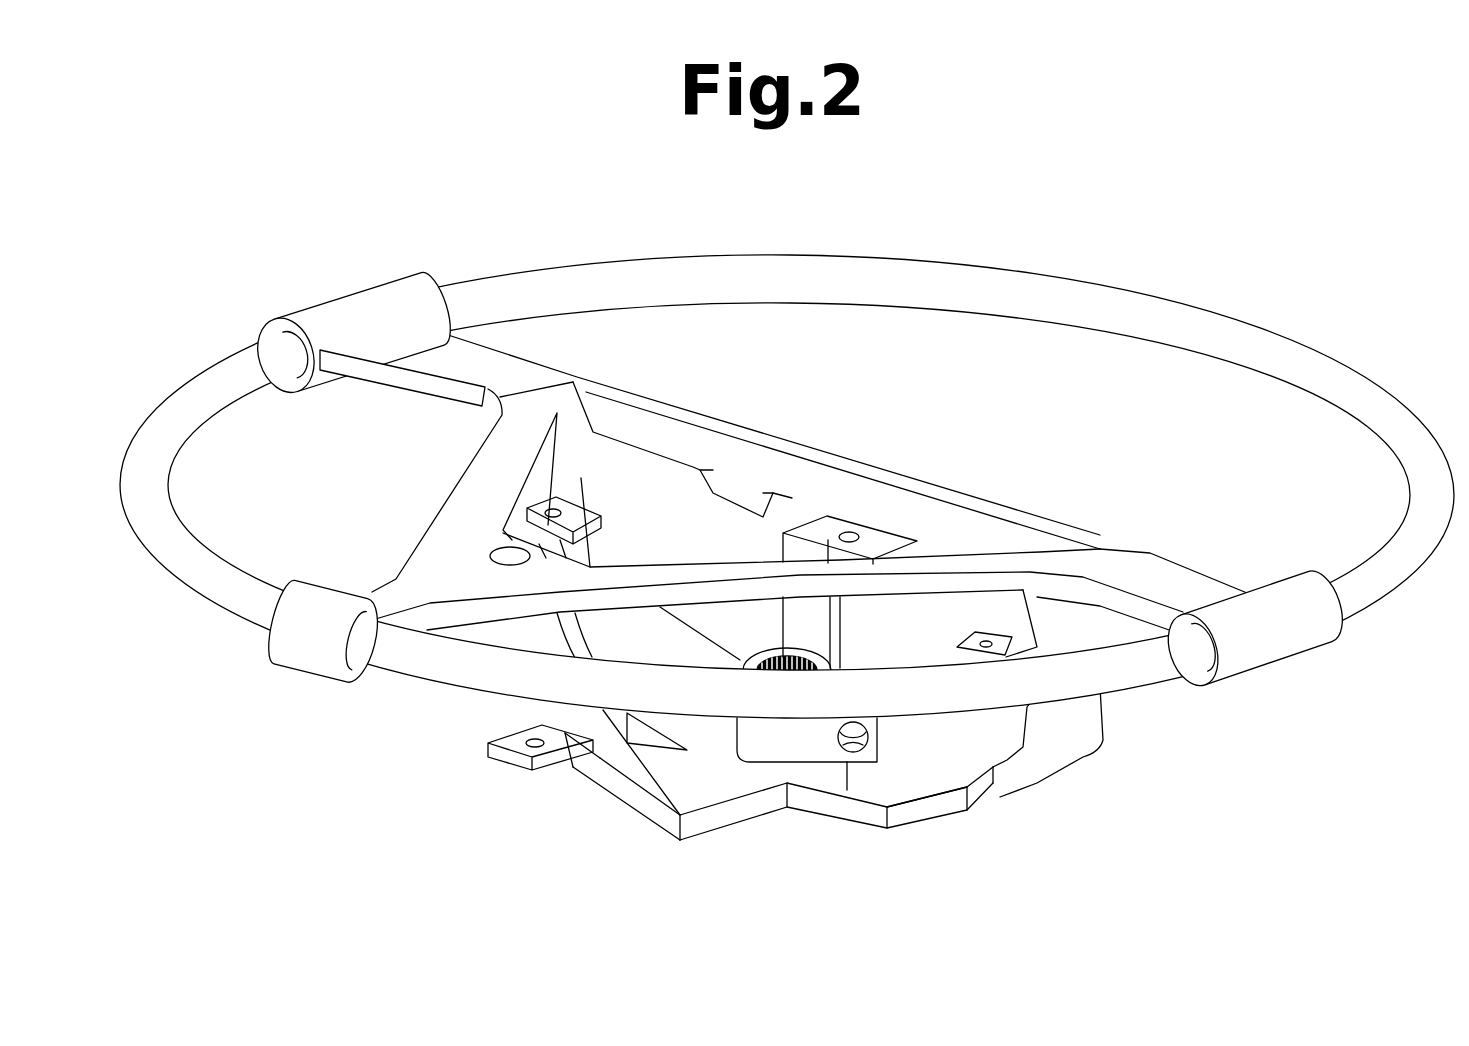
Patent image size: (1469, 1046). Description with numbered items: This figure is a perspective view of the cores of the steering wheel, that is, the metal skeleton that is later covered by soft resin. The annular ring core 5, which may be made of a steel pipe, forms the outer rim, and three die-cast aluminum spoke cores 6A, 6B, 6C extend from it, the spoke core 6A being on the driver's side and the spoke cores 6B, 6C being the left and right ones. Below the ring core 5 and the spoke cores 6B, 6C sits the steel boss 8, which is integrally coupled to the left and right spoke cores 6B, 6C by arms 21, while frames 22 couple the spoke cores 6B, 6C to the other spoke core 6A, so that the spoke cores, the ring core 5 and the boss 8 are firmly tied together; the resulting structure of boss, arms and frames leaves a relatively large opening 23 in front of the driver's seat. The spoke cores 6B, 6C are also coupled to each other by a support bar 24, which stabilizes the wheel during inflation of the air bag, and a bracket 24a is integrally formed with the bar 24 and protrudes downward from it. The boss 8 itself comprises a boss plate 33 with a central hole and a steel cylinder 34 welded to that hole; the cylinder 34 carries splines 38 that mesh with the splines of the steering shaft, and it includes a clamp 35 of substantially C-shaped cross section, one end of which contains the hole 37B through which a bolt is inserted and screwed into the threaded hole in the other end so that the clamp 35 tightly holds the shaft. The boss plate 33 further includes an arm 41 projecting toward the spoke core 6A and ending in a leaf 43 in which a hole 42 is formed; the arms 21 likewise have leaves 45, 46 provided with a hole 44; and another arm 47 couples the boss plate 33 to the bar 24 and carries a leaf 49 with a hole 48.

The ring core 5 is at (1088, 287).
The spoke core 6A is at (388, 601).
The spoke core 6B is at (480, 358).
The spoke core 6C is at (1182, 577).
The boss 8 is at (800, 845).
The arm 21 is at (630, 530).
The frame 22 is at (505, 463).
The opening 23 is at (487, 713).
The support bar 24 is at (843, 457).
The bracket 24a is at (718, 497).
The boss plate 33 is at (920, 808).
The cylinder 34 is at (752, 733).
The clamp 35 is at (870, 758).
The hole 37B is at (847, 765).
The splines 38 is at (793, 648).
The arm 41 is at (624, 788).
The hole 42 is at (537, 727).
The leaf 43 is at (578, 755).
The hole 44 is at (562, 510).
The leaf 45 is at (1010, 648).
The leaf 46 is at (597, 495).
The arm 47 is at (782, 552).
The hole 48 is at (847, 532).
The leaf 49 is at (805, 530).